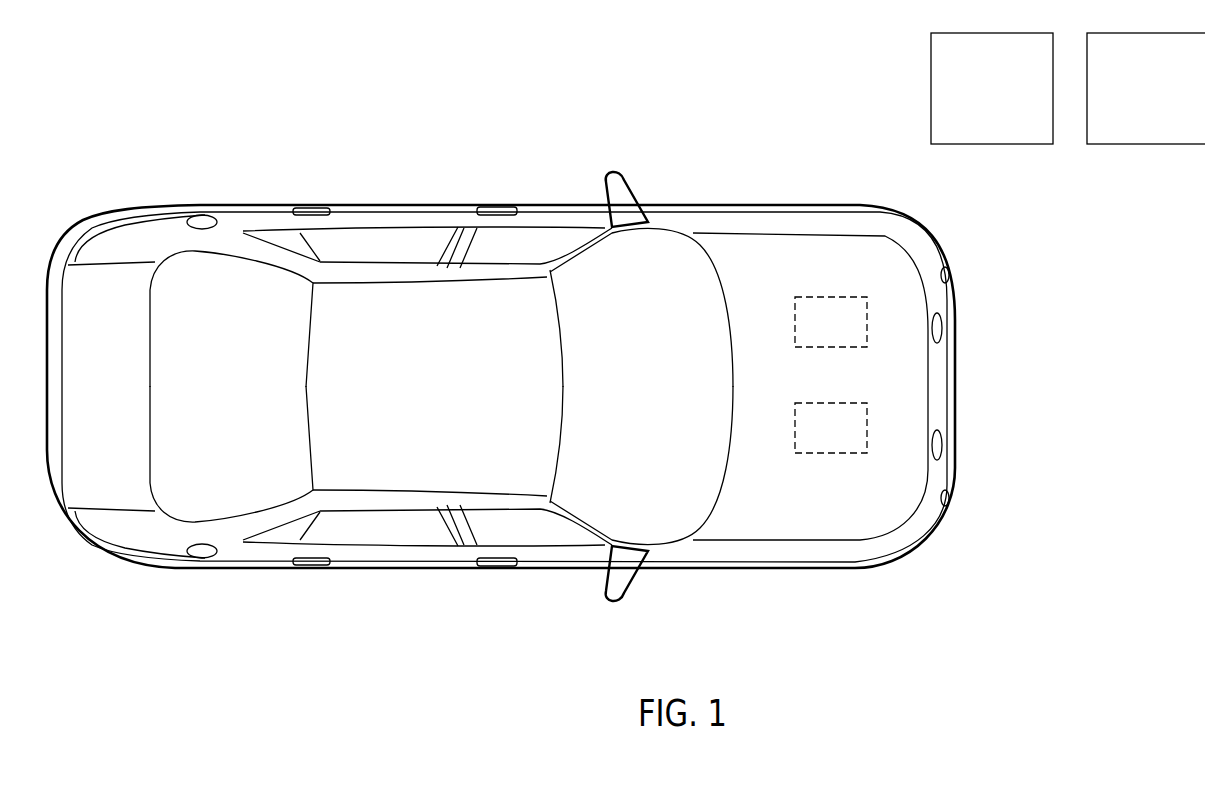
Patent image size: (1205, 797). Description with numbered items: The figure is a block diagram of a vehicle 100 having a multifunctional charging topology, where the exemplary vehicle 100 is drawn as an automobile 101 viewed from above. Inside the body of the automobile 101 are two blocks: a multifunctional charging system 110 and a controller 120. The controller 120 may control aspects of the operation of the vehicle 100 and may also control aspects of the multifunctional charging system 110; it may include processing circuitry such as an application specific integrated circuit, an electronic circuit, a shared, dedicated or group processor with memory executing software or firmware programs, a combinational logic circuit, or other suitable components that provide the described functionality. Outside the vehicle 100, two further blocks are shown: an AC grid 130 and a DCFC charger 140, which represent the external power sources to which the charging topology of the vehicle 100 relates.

The vehicle 100 is at (501, 350).
The automobile 101 is at (230, 207).
The multifunctional charging system 110 is at (831, 322).
The controller 120 is at (831, 428).
The AC grid 130 is at (1016, 99).
The DCFC charger 140 is at (1173, 99).